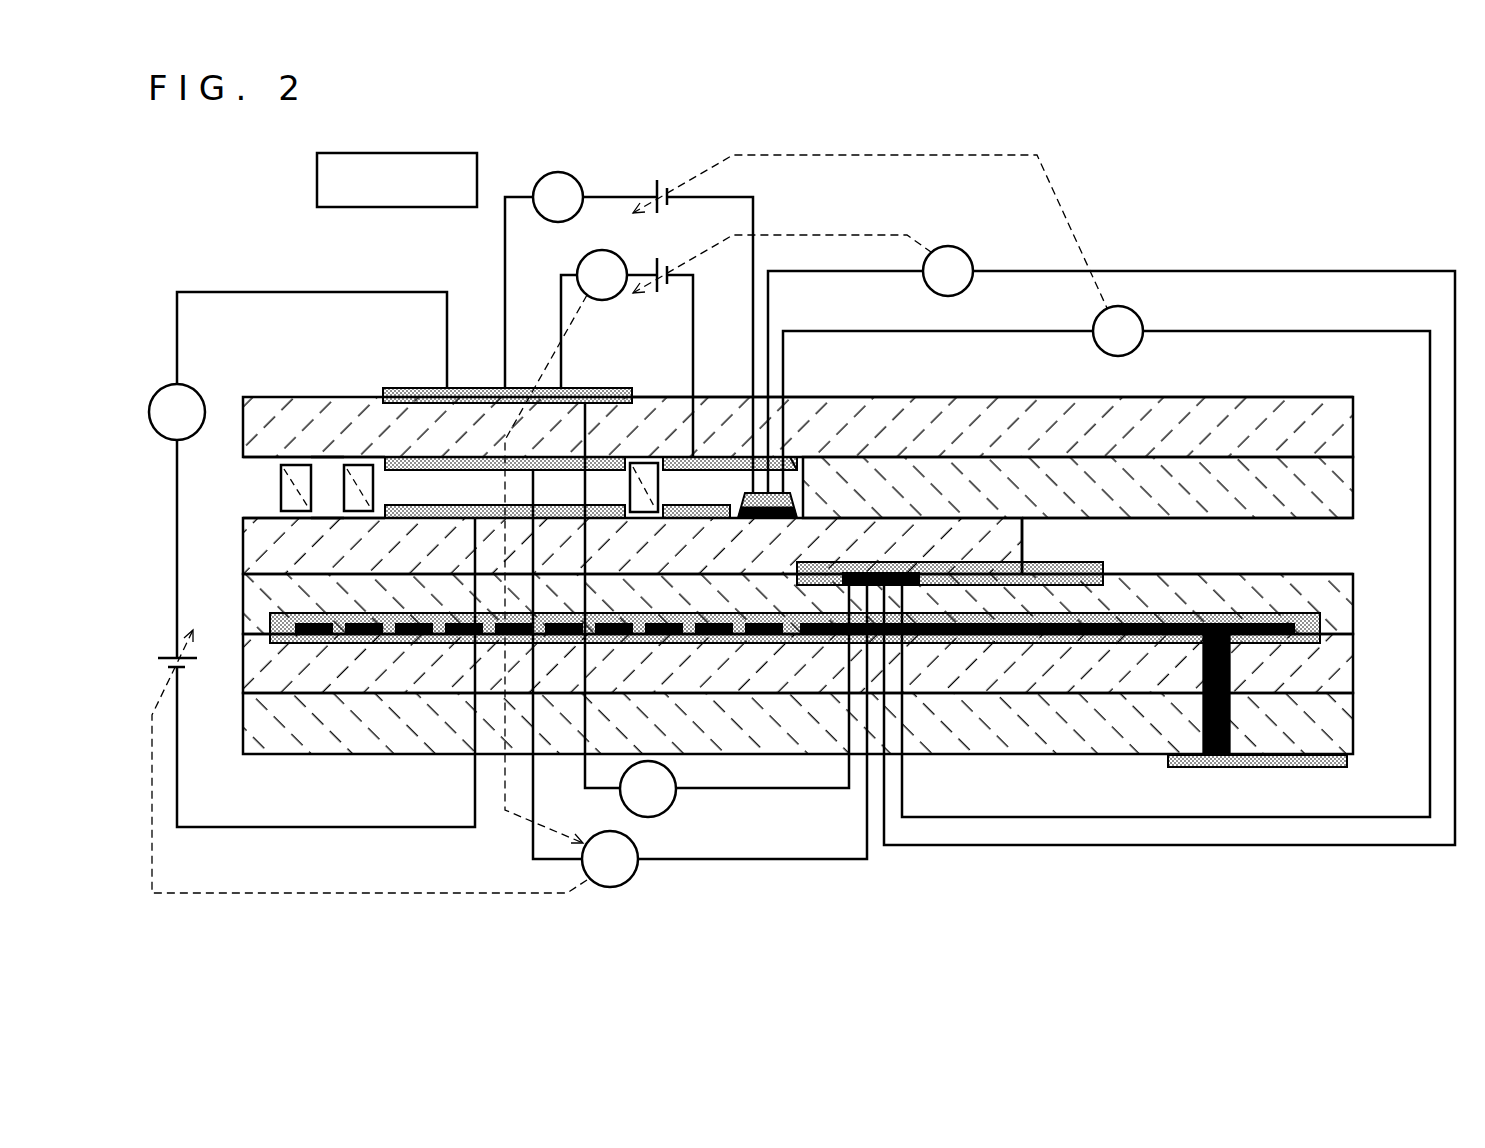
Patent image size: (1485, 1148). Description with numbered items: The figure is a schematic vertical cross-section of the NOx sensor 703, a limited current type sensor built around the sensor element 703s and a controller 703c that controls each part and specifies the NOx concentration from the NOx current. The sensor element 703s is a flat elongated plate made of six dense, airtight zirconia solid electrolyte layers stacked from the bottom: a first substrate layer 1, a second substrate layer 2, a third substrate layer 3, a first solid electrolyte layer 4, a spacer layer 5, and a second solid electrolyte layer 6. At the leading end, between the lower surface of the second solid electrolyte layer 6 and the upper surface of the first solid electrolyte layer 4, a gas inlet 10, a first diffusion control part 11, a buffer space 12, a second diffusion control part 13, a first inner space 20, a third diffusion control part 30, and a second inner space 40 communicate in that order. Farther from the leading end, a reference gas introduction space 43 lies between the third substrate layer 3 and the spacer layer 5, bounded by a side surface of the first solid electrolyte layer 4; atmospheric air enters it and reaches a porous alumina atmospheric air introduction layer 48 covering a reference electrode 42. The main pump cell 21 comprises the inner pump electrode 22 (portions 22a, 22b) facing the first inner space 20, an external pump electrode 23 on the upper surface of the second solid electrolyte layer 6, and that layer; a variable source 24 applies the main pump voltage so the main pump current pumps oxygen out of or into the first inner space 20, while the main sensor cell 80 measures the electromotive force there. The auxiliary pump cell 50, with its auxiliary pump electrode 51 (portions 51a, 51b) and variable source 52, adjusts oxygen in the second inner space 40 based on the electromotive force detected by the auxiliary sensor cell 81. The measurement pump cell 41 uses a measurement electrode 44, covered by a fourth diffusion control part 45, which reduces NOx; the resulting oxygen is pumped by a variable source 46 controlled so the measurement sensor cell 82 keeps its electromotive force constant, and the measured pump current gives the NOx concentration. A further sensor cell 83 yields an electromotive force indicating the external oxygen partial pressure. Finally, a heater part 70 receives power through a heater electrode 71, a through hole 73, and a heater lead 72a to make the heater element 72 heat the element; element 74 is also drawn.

The NOx sensor 703 is at (785, 479).
The controller 703c is at (391, 152).
The sensor element 703s is at (1192, 397).
The first substrate layer 1 is at (1340, 718).
The second substrate layer 2 is at (1340, 667).
The third substrate layer 3 is at (1340, 605).
The first solid electrolyte layer 4 is at (252, 545).
The spacer layer 5 is at (1353, 470).
The second solid electrolyte layer 6 is at (1353, 432).
The gas inlet 10 is at (287, 426).
The first diffusion control part 11 is at (296, 465).
The buffer space 12 is at (330, 470).
The second diffusion control part 13 is at (357, 465).
The first inner space 20 is at (505, 417).
The main pump cell 21 is at (292, 522).
The inner pump electrode 22 is at (505, 417).
The inner pump electrode portion 22a is at (528, 457).
The inner pump electrode portion 22b is at (470, 505).
The external pump electrode 23 is at (404, 388).
The variable source 24 is at (158, 660).
The third diffusion control part 30 is at (643, 465).
The second inner space 40 is at (721, 457).
The measurement pump cell 41 is at (625, 302).
The reference electrode 42 is at (913, 587).
The reference gas introduction space 43 is at (1340, 545).
The measurement electrode 44 is at (757, 520).
The fourth diffusion control part 45 is at (738, 519).
The variable source 46 is at (659, 180).
The atmospheric air introduction layer 48 is at (950, 572).
The auxiliary pump cell 50 is at (644, 340).
The auxiliary pump electrode 51 is at (737, 457).
The auxiliary pump electrode portion 51a is at (797, 457).
The auxiliary pump electrode portion 51b is at (674, 520).
The variable source 52 is at (661, 294).
The heater part 70 is at (927, 643).
The heater electrode 71 is at (1350, 762).
The heater element 72 is at (791, 711).
The heater lead 72a is at (1050, 643).
The through hole 73 is at (1232, 712).
The heater resistor 74 is at (278, 643).
The main sensor cell 80 is at (666, 884).
The auxiliary sensor cell 81 is at (1207, 272).
The measurement sensor cell 82 is at (1214, 332).
The sensor cell 83 is at (697, 806).